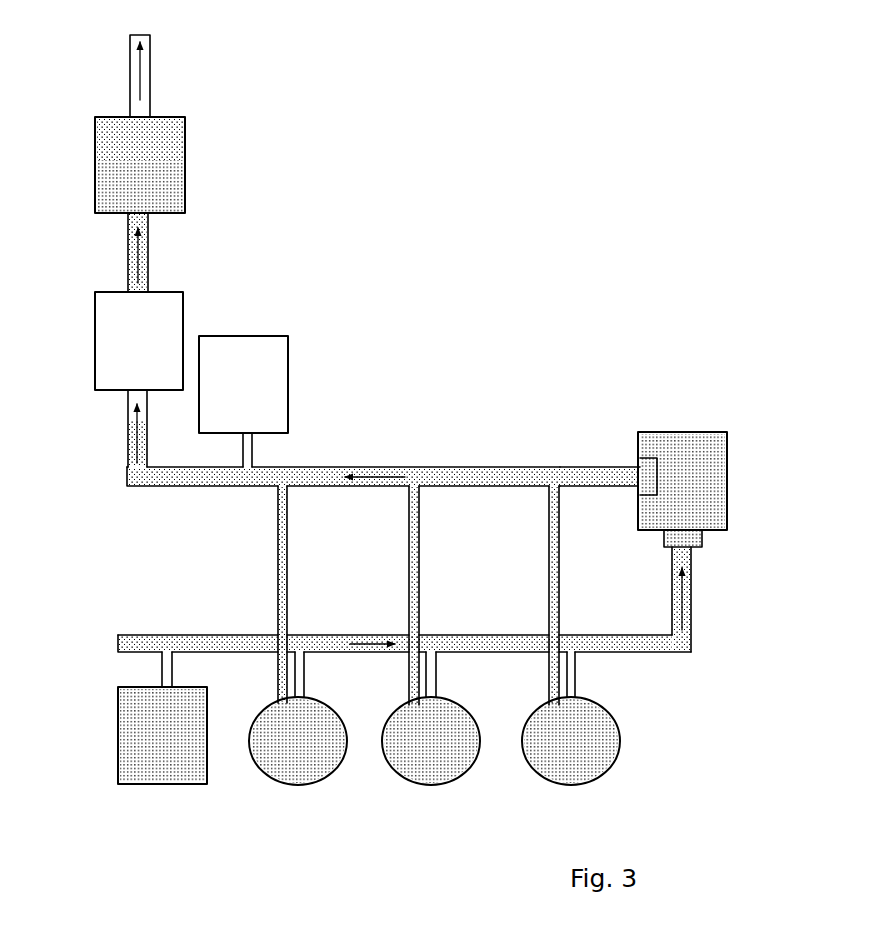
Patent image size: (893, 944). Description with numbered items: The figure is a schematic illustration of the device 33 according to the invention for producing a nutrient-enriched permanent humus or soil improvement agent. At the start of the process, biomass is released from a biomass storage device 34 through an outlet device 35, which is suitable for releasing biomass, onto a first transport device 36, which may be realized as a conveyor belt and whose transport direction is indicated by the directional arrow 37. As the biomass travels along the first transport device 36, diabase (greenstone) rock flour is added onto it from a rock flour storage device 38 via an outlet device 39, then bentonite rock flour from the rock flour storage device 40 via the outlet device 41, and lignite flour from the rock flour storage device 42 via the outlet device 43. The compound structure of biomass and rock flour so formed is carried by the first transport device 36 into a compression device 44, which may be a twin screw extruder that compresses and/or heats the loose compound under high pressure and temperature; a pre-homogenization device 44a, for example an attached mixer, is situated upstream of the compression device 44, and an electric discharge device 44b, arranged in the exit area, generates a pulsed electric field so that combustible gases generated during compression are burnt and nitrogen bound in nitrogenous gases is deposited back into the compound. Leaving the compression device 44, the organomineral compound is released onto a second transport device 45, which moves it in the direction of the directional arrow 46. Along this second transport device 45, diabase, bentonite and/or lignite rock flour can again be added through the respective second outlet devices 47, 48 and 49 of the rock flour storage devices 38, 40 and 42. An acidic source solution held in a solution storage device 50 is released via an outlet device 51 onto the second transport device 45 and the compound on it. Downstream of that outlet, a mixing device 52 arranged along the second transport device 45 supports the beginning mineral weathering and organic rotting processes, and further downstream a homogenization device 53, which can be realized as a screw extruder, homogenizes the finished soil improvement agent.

The device 33 is at (570, 121).
The biomass storage device 34 is at (162, 735).
The outlet device 35 is at (158, 662).
The first transport device 36 is at (127, 638).
The directional arrow 37 is at (348, 642).
The rock flour storage device 38 is at (298, 741).
The outlet device 39 is at (307, 688).
The rock flour storage device 40 is at (431, 741).
The outlet device 41 is at (439, 688).
The rock flour storage device 42 is at (571, 741).
The outlet device 43 is at (578, 688).
The compression device 44 is at (682, 481).
The pre-homogenization device 44a is at (705, 545).
The electric discharge device 44b is at (640, 490).
The second transport device 45 is at (120, 70).
The directional arrow 46 is at (375, 474).
The second outlet device 47 is at (266, 547).
The second outlet device 48 is at (398, 547).
The second outlet device 49 is at (538, 547).
The solution storage device 50 is at (243, 384).
The outlet device 51 is at (240, 441).
The mixing device 52 is at (139, 341).
The homogenization device 53 is at (140, 165).